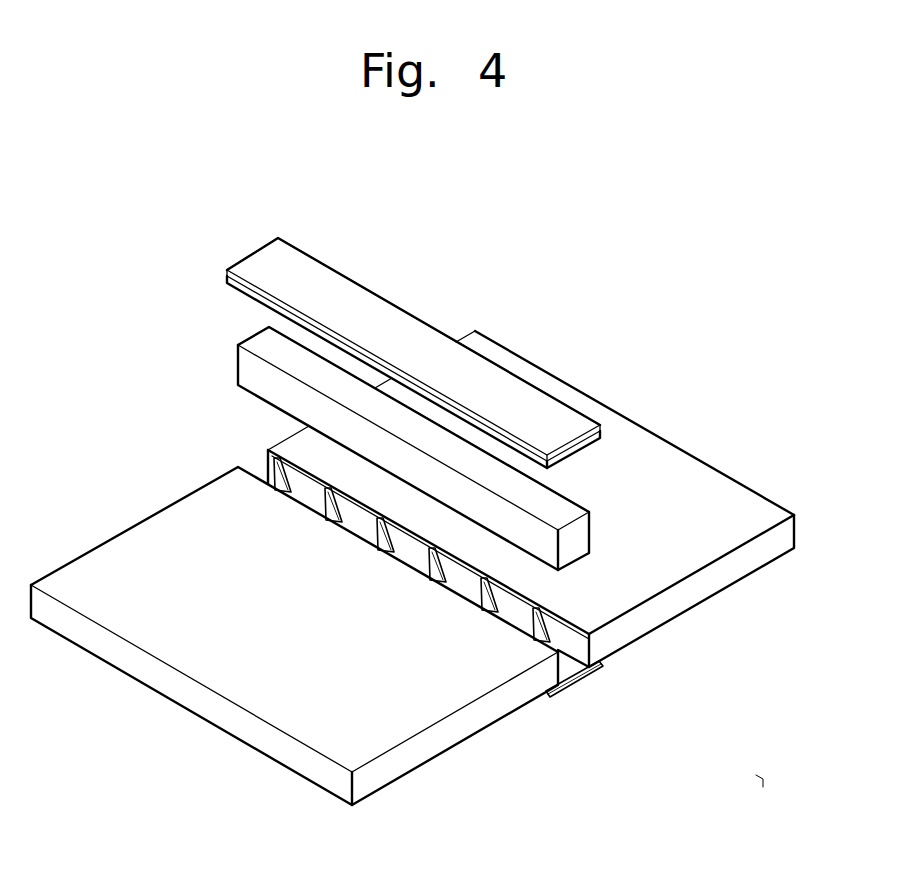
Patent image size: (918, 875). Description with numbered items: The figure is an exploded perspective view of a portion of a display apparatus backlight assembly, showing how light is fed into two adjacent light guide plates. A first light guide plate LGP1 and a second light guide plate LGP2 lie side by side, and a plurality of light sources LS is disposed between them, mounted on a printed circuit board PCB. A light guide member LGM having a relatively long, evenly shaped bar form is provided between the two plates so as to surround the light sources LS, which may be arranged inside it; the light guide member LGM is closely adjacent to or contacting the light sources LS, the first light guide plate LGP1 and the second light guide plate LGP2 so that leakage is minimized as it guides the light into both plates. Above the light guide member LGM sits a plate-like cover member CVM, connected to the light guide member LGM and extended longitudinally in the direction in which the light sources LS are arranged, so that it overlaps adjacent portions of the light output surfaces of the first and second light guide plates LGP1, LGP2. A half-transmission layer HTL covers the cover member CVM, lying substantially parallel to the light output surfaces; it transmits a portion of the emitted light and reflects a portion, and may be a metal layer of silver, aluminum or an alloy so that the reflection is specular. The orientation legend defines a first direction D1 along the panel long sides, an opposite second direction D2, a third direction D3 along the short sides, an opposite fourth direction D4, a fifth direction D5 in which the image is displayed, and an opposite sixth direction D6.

The first light guide plate LGP1 is at (438, 742).
The second light guide plate LGP2 is at (710, 585).
The light sources LS is at (268, 483).
The printed circuit board PCB is at (580, 680).
The light guide member LGM is at (252, 370).
The half-transmission layer HTL is at (350, 292).
The cover member CVM is at (258, 292).
The first direction D1 is at (754, 785).
The second direction D2 is at (754, 785).
The third direction D3 is at (754, 785).
The fourth direction D4 is at (754, 785).
The fifth direction D5 is at (754, 785).
The sixth direction D6 is at (754, 785).